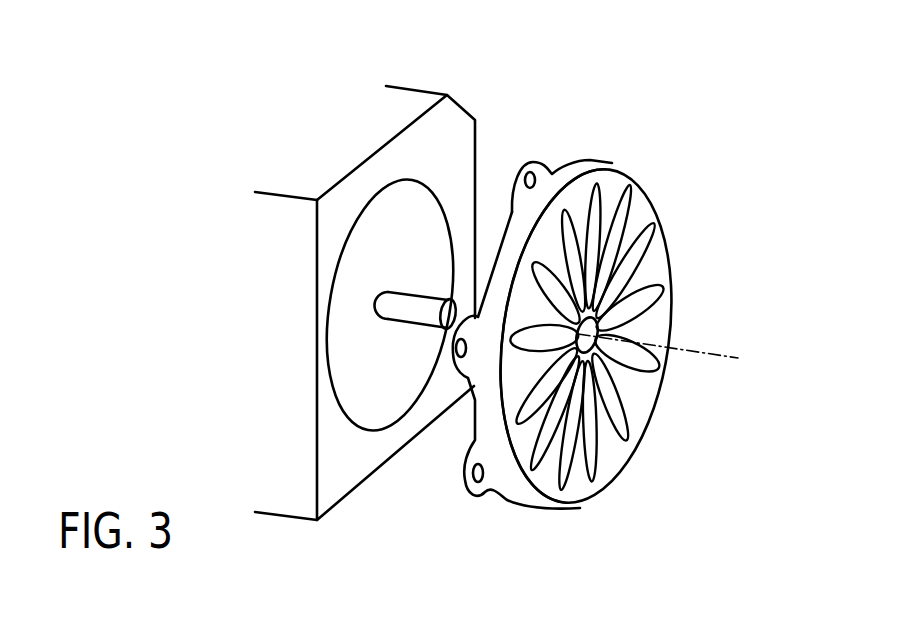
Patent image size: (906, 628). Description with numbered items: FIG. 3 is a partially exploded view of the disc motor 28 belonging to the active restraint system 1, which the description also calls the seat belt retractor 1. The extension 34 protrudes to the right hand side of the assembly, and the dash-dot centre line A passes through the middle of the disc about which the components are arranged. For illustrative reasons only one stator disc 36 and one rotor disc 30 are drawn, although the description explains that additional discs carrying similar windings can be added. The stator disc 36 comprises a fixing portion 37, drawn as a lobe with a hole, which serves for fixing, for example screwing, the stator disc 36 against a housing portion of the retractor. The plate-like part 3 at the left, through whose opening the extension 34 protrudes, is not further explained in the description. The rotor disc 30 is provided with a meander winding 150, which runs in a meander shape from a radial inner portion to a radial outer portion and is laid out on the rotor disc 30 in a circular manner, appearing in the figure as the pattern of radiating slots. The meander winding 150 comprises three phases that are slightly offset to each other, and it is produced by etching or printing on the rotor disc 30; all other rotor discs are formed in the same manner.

The active restraint system 1 is at (227, 260).
The mounting wall / housing part 3 is at (305, 143).
The pump 28 is at (592, 277).
The rotor disc 30 is at (663, 230).
The extension 34 is at (406, 340).
The stator disc 36 is at (573, 163).
The fixing portion 37 is at (520, 163).
The meander winding 150 is at (638, 203).
The axis A is at (733, 347).